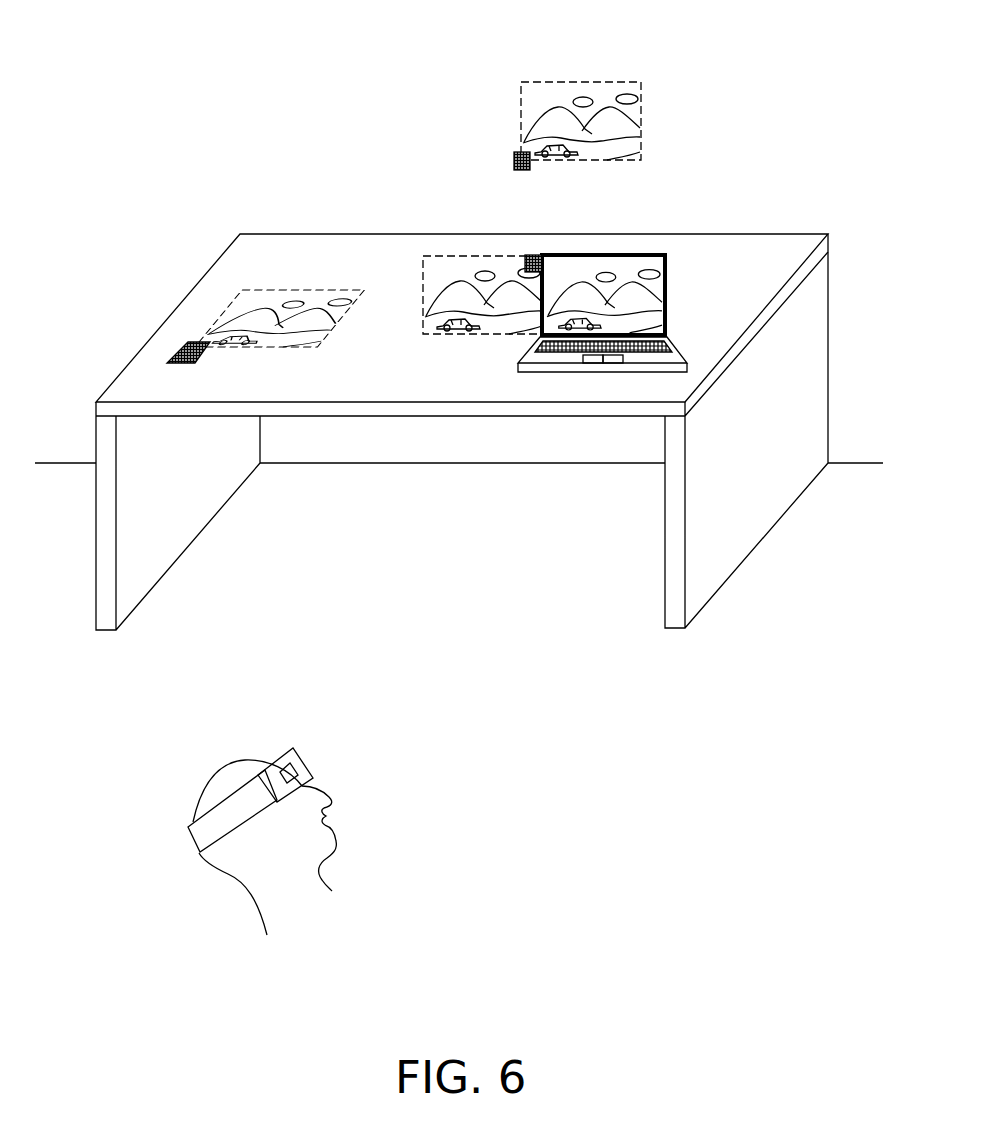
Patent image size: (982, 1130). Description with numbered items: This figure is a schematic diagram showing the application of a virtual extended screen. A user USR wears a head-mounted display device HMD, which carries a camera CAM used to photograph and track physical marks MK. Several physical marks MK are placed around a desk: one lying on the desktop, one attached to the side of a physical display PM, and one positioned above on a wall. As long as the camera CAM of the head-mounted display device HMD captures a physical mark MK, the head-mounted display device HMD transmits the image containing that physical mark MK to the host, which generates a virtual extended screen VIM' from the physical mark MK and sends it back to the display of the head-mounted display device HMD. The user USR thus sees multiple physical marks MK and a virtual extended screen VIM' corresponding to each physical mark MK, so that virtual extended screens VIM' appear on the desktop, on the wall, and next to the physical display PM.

The virtual extended screen VIM' is at (396, 177).
The physical mark MK is at (514, 158).
The display PM is at (628, 253).
The user USR is at (217, 773).
The head-mounted display device HMD is at (268, 770).
The camera CAM is at (302, 770).